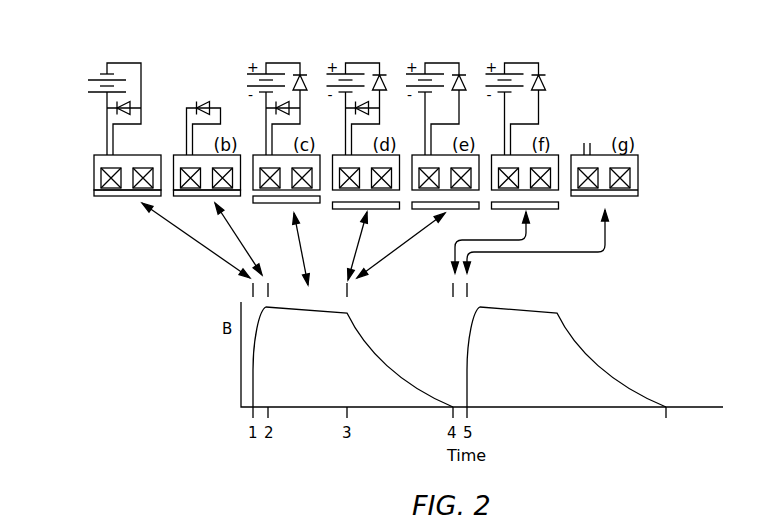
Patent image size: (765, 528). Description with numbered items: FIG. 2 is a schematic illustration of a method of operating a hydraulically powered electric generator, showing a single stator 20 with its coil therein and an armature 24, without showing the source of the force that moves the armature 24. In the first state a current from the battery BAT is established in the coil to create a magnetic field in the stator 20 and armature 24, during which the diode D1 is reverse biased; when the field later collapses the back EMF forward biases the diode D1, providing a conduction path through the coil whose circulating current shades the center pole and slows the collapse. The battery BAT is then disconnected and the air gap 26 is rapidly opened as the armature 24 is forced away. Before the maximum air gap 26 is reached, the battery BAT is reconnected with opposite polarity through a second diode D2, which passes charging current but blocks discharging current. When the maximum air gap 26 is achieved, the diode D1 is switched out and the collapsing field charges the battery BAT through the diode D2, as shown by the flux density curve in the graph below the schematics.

The stator 20 is at (102, 157).
The armature 24 is at (128, 197).
The air gap 26 is at (338, 199).
The battery BAT is at (87, 87).
The diode D1 is at (124, 104).
The second diode D2 is at (305, 80).